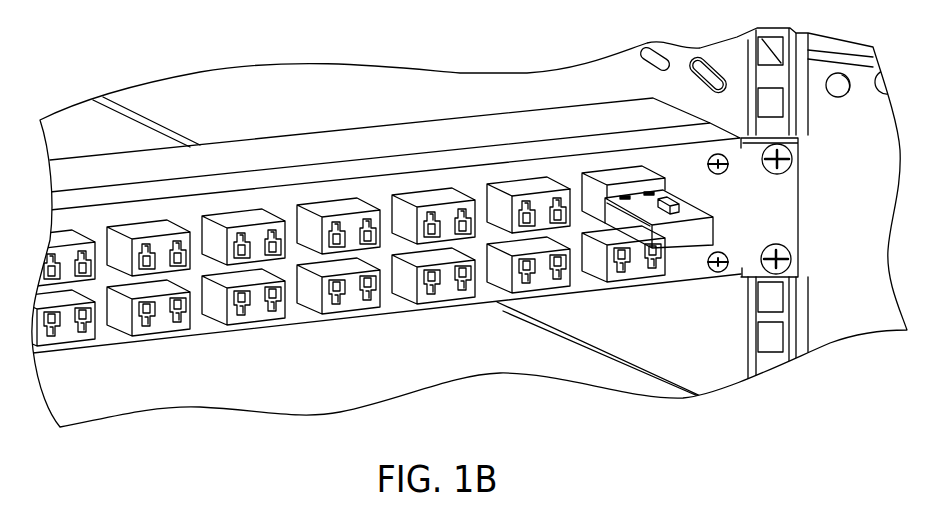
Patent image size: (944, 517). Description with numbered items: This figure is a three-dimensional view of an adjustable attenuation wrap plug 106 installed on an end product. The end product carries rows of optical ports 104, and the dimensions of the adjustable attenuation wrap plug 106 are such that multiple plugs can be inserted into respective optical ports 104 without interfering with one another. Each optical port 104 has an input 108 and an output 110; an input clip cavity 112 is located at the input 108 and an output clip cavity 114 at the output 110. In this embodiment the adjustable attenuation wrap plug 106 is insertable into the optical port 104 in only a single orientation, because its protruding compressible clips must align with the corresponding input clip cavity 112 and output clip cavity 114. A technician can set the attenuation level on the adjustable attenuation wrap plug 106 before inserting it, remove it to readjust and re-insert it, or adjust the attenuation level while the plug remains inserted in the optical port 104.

The optical port 104 is at (623, 178).
The adjustable attenuation wrap plug 106 is at (680, 240).
The input 108 is at (540, 227).
The output 110 is at (528, 228).
The input clip cavity 112 is at (524, 208).
The output clip cavity 114 is at (554, 204).